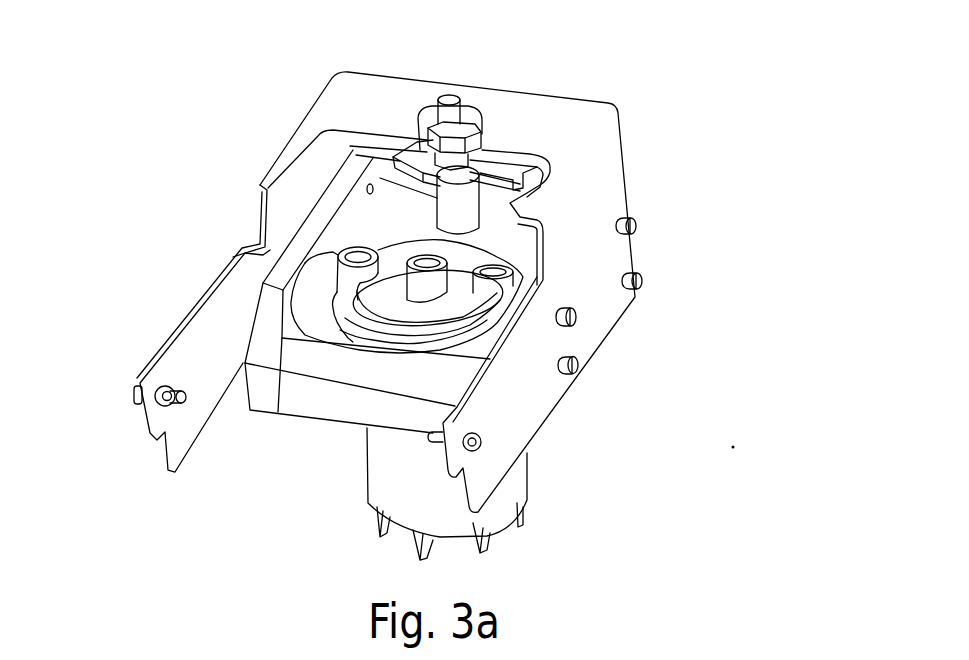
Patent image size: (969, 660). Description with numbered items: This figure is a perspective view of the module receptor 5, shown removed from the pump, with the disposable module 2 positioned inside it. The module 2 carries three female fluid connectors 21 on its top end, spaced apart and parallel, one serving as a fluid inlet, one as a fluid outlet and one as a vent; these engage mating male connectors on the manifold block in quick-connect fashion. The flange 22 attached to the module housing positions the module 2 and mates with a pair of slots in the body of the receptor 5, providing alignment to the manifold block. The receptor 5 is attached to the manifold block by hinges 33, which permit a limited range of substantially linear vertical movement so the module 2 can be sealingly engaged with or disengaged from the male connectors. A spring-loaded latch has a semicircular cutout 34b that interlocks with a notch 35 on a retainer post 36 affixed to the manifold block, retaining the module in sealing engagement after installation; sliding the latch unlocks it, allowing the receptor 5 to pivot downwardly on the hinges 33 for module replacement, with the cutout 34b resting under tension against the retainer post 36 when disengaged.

The module receptor 5 is at (706, 151).
The flange 22 is at (397, 225).
The female fluid connectors 21 is at (415, 272).
The semicircular cutout 34b is at (420, 153).
The notch 35 is at (462, 173).
The retainer post 36 is at (468, 218).
The hinges 33 is at (133, 393).
The disposable module 2 is at (377, 462).